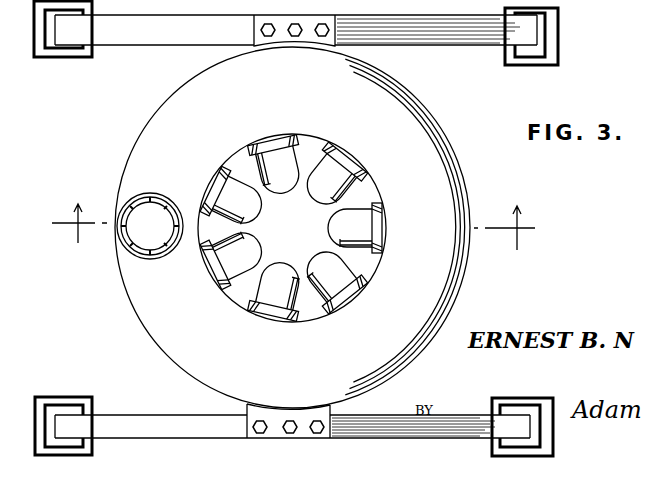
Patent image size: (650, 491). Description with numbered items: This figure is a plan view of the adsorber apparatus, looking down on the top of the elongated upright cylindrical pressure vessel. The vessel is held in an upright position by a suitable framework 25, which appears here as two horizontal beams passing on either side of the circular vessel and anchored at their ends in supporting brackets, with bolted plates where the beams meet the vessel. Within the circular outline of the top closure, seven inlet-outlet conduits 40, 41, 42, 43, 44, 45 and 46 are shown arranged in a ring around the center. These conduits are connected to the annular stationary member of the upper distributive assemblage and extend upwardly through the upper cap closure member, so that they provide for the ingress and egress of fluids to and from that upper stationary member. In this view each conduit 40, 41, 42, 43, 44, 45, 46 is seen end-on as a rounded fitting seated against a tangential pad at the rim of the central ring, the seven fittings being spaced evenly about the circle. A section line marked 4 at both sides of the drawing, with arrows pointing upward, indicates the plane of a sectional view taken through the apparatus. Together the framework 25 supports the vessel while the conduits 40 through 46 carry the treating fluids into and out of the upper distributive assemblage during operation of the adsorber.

The framework 25 is at (156, 53).
The section line 4- 4 is at (293, 230).
The inlet-outlet conduit 40 is at (385, 227).
The inlet-outlet conduit 41 is at (343, 161).
The inlet-outlet conduit 42 is at (277, 143).
The inlet-outlet conduit 43 is at (216, 190).
The inlet-outlet conduit 44 is at (226, 289).
The inlet-outlet conduit 45 is at (294, 319).
The inlet-outlet conduit 46 is at (350, 295).